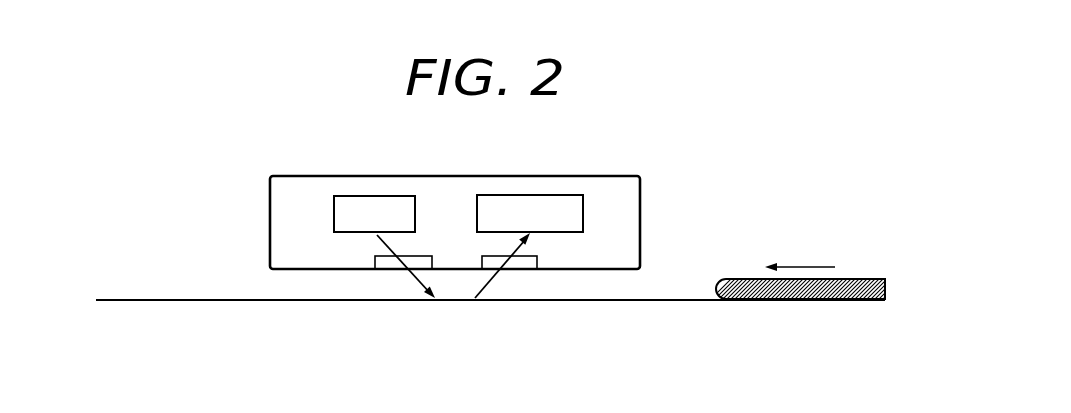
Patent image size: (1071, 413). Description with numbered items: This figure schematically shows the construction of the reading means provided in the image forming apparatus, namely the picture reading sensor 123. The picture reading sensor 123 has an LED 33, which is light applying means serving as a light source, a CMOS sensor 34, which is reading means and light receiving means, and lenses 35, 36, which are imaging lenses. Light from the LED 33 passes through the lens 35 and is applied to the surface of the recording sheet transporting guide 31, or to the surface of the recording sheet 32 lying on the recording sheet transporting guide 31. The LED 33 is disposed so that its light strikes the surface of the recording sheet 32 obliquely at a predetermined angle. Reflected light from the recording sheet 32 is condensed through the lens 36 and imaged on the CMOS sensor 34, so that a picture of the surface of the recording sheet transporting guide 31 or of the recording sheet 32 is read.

The picture reading sensor 123 is at (488, 175).
The LED 33 is at (333, 205).
The CMOS sensor 34 is at (583, 208).
The lens 35 is at (375, 258).
The lens 36 is at (537, 258).
The recording sheet transporting guide 31 is at (205, 300).
The recording sheet 32 is at (860, 279).